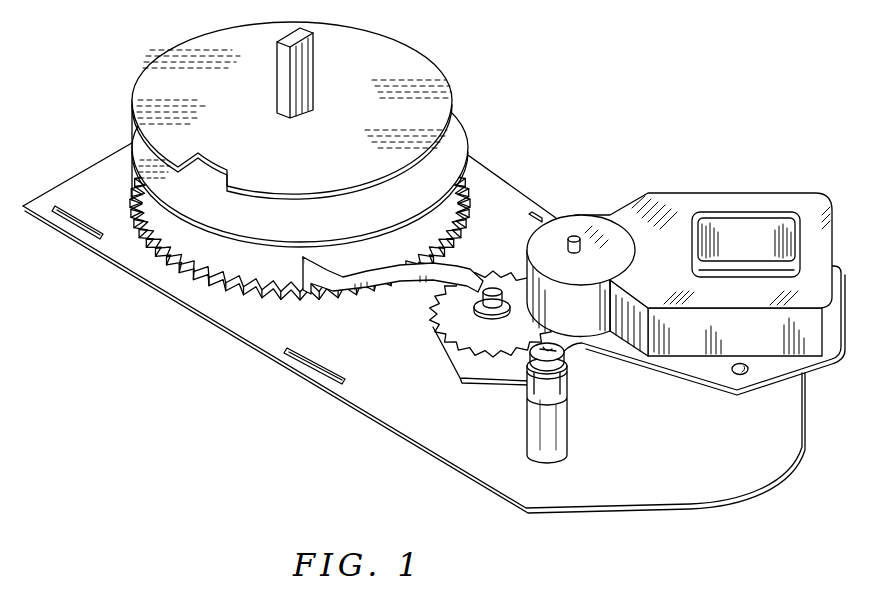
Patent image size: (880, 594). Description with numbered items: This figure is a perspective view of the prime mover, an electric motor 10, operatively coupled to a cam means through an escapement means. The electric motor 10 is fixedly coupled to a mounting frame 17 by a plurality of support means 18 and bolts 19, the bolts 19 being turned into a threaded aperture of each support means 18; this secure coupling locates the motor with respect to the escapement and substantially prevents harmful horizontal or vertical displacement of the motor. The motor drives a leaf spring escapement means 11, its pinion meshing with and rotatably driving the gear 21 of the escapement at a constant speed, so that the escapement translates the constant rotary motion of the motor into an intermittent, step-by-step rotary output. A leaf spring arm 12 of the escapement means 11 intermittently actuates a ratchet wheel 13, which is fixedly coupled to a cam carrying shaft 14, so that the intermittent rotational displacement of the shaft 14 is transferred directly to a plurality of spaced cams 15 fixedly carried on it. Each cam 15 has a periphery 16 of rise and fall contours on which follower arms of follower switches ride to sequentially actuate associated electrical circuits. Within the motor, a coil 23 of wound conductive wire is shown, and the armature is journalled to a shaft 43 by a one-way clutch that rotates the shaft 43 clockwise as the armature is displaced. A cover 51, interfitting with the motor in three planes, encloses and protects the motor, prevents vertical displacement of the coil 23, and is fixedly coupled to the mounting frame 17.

The electric motor 10 is at (654, 179).
The leaf spring escapement means 11 is at (489, 263).
The leaf spring arm 12 is at (385, 283).
The ratchet wheel 13 is at (444, 222).
The cam carrying shaft 14 is at (303, 91).
The cams 15 is at (455, 142).
The periphery 16 is at (282, 243).
The mounting frame 17 is at (388, 409).
The support means 18 is at (538, 440).
The bolts 19 is at (568, 361).
The gear 21 is at (446, 329).
The coil 23 is at (742, 238).
The shaft 43 is at (581, 258).
The cover 51 is at (788, 203).